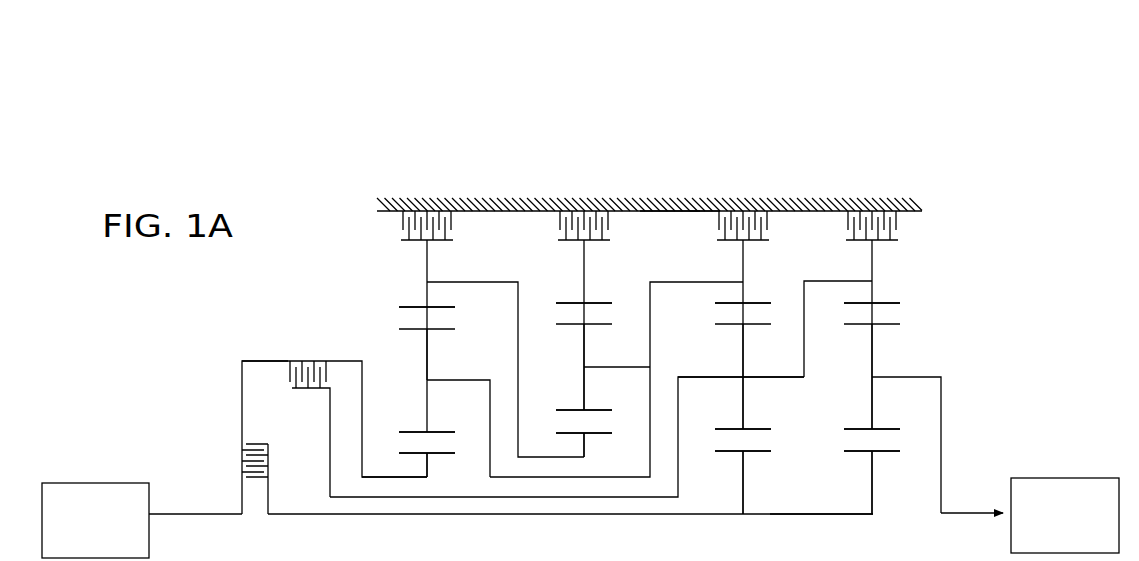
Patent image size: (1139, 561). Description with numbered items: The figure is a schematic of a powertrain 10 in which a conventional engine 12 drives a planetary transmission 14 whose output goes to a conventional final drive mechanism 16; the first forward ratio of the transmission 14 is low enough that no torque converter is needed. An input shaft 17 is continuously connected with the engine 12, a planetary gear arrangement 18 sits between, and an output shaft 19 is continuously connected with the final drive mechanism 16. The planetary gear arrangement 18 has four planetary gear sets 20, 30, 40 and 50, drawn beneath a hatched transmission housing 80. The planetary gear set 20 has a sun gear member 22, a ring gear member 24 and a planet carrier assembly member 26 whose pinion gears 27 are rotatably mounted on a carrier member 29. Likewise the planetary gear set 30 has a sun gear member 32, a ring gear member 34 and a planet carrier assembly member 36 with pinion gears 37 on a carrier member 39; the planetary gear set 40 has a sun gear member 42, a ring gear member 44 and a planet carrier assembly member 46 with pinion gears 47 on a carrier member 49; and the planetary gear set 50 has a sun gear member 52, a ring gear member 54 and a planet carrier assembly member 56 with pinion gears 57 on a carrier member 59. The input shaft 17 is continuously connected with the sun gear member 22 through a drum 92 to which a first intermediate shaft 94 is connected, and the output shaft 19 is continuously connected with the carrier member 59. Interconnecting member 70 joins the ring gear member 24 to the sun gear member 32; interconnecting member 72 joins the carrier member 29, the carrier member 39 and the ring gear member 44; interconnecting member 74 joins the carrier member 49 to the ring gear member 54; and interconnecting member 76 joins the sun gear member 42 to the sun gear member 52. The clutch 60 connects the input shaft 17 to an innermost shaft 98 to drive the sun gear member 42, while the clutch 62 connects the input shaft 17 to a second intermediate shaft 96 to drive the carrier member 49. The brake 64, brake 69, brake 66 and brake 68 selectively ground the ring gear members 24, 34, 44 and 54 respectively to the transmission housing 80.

The powertrain 10 is at (320, 298).
The engine 12 is at (100, 476).
The planetary transmission 14 is at (410, 186).
The final drive mechanism 16 is at (1058, 466).
The input shaft 17 is at (198, 514).
The planetary gear arrangement 18 is at (640, 186).
The output shaft 19 is at (976, 513).
The planetary gear set 20 is at (441, 462).
The sun gear member 22 is at (461, 456).
The ring gear member 24 is at (411, 306).
The planet carrier assembly member 26 is at (407, 397).
The pinion gears 27 is at (427, 352).
The carrier member 29 is at (474, 380).
The planetary gear set 30 is at (598, 442).
The sun gear member 32 is at (605, 436).
The ring gear member 34 is at (603, 303).
The planet carrier assembly member 36 is at (571, 352).
The pinion gears 37 is at (588, 356).
The carrier member 39 is at (625, 368).
The planetary gear set 40 is at (756, 458).
The sun gear member 42 is at (766, 454).
The ring gear member 44 is at (759, 303).
The planet carrier assembly member 46 is at (713, 358).
The pinion gears 47 is at (746, 352).
The carrier member 49 is at (780, 378).
The planetary gear set 50 is at (881, 457).
The sun gear member 52 is at (891, 453).
The ring gear member 54 is at (889, 303).
The planet carrier assembly member 56 is at (861, 367).
The pinion gears 57 is at (875, 350).
The carrier member 59 is at (910, 378).
The clutch 60 is at (264, 442).
The clutch 62 is at (282, 375).
The brake 64 is at (460, 215).
The brake 66 is at (781, 215).
The brake 68 is at (906, 215).
The brake 69 is at (551, 215).
The interconnecting member 70 is at (488, 282).
The interconnecting member 72 is at (490, 400).
The interconnecting member 74 is at (826, 281).
The interconnecting member 76 is at (835, 514).
The transmission housing 80 is at (703, 211).
The drum 92 is at (250, 361).
The first intermediate shaft 94 is at (383, 478).
The second intermediate shaft 96 is at (418, 497).
The innermost shaft 98 is at (513, 514).